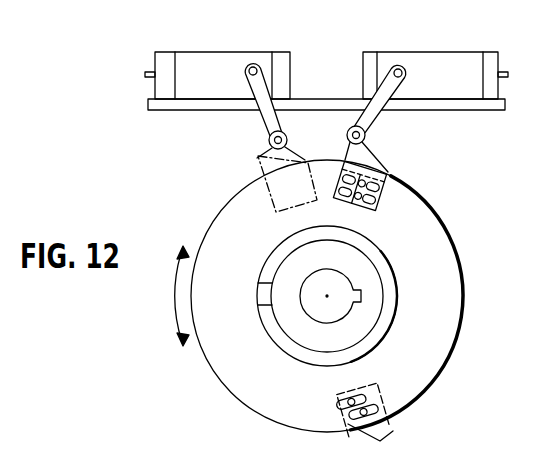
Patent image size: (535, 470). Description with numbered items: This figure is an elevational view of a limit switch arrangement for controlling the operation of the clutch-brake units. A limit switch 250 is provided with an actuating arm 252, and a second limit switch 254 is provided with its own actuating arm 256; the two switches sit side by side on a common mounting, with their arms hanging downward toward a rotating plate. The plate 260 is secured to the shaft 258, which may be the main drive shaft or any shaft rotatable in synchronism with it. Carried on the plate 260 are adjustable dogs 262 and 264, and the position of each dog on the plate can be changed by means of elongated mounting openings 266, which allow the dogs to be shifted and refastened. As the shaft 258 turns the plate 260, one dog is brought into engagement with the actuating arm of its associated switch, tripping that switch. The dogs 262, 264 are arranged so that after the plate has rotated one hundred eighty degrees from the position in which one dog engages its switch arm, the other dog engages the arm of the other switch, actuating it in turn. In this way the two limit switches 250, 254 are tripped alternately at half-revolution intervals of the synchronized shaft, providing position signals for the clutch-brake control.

The limit switch 250 is at (212, 52).
The actuating arm 252 is at (266, 127).
The limit switch 254 is at (427, 52).
The actuating arm 256 is at (366, 132).
The shaft 258 is at (306, 314).
The plate 260 is at (463, 300).
The adjustable dog 262 is at (387, 440).
The adjustable dog 264 is at (387, 172).
The elongated mounting openings 266 is at (355, 435).